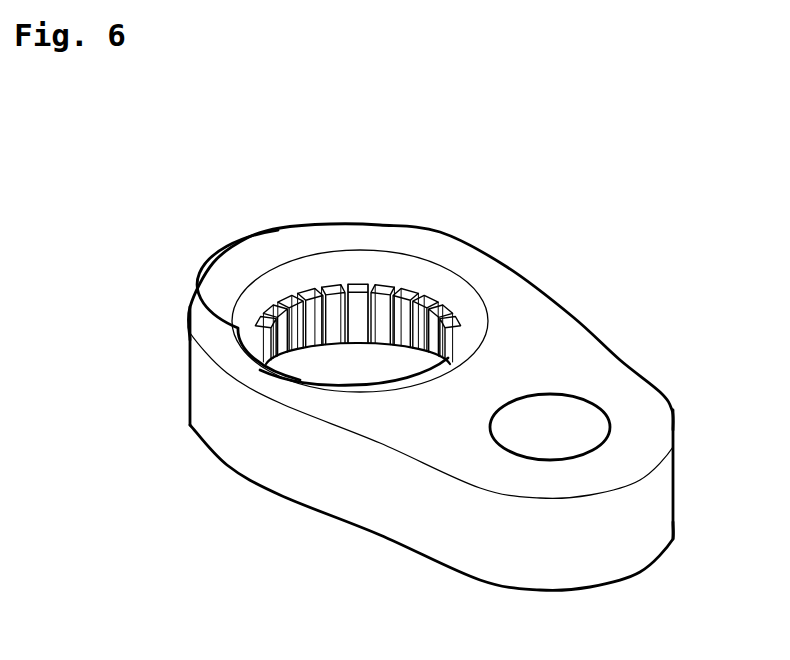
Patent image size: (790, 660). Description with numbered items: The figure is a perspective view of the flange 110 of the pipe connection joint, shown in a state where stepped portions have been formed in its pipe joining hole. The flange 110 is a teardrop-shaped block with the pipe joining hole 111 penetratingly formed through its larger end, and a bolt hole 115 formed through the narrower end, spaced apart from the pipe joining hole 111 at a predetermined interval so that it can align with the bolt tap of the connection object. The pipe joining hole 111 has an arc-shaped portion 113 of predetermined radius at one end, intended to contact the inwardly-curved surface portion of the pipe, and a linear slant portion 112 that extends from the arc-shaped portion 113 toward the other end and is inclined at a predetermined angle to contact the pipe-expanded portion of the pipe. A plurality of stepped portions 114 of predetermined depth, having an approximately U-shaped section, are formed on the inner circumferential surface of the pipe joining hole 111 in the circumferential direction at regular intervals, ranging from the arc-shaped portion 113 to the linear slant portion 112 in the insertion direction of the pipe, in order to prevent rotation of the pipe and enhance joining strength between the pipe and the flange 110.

The flange 110 is at (557, 305).
The pipe joining hole 111 is at (97, 318).
The linear slant portion 112 is at (330, 391).
The arc-shaped portion 113 is at (260, 302).
The stepped portions 114 is at (332, 300).
The bolt hole 115 is at (607, 413).